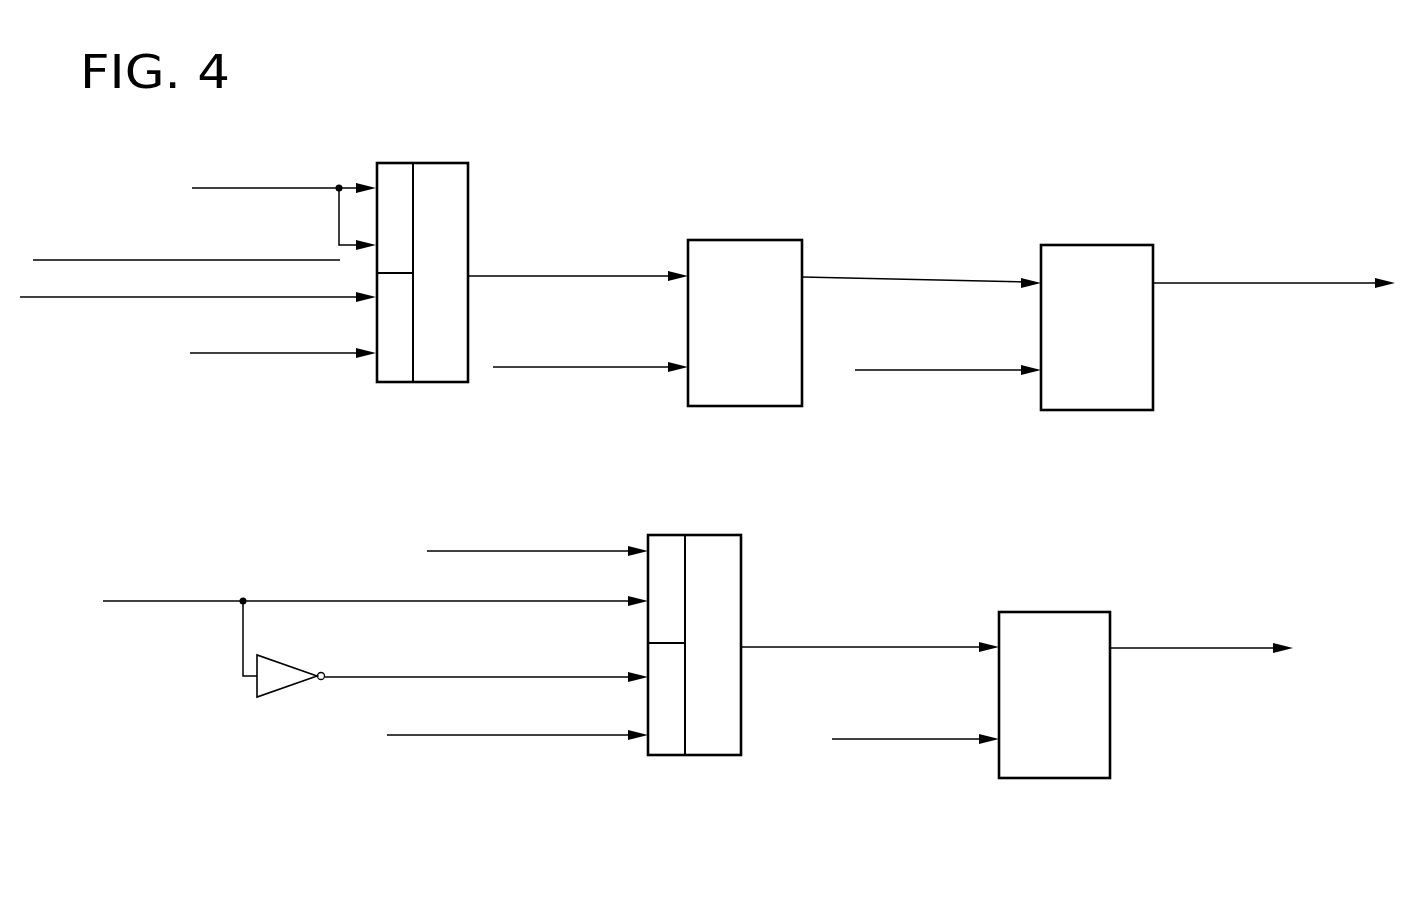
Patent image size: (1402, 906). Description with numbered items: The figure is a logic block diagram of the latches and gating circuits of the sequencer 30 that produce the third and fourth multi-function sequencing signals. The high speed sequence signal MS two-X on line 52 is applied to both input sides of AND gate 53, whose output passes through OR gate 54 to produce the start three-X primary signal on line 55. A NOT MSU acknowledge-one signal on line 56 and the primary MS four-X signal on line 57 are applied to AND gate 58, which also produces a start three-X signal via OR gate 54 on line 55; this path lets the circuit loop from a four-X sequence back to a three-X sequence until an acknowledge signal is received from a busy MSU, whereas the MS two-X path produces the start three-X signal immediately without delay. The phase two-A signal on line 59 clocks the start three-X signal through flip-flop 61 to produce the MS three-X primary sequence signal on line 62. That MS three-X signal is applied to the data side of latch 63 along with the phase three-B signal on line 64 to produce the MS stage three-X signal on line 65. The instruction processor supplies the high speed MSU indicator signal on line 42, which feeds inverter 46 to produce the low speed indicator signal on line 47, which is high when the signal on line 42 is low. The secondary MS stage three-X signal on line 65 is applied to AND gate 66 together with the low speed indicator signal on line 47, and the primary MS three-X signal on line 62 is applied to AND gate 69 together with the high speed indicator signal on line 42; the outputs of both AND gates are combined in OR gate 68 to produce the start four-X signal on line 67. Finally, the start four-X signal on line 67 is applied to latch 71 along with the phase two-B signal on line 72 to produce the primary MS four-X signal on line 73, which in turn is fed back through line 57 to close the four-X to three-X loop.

The sequencer 30 is at (1150, 512).
The high speed MSU indicator signal line 42 is at (208, 601).
The inverter 46 is at (283, 687).
The low speed indicator signal line 47 is at (362, 678).
The MS2X primary sequence signal line 52 is at (253, 190).
The AND gate 53 is at (396, 162).
The OR gate 54 is at (470, 196).
The start 3X signal line 55 is at (590, 277).
The NOT MSU acknowledge 1 signal line 56 is at (108, 298).
The primary MS4X signal line 57 is at (253, 355).
The AND gate 58 is at (392, 383).
The phase 2A signal line 59 is at (588, 368).
The flip-flop 61 is at (739, 240).
The MS3X signal line 62 is at (928, 281).
The latch 63 is at (1090, 245).
The phase 3B signal line 64 is at (935, 372).
The MS stage 3X signal line 65 is at (1210, 284).
The AND gate 66 is at (665, 756).
The start 4X signal line 67 is at (882, 650).
The OR gate 68 is at (745, 565).
The AND gate 69 is at (667, 535).
The latch 71 is at (1038, 610).
The phase 2B signal line 72 is at (915, 741).
The primary MS4X signal line 73 is at (1215, 650).